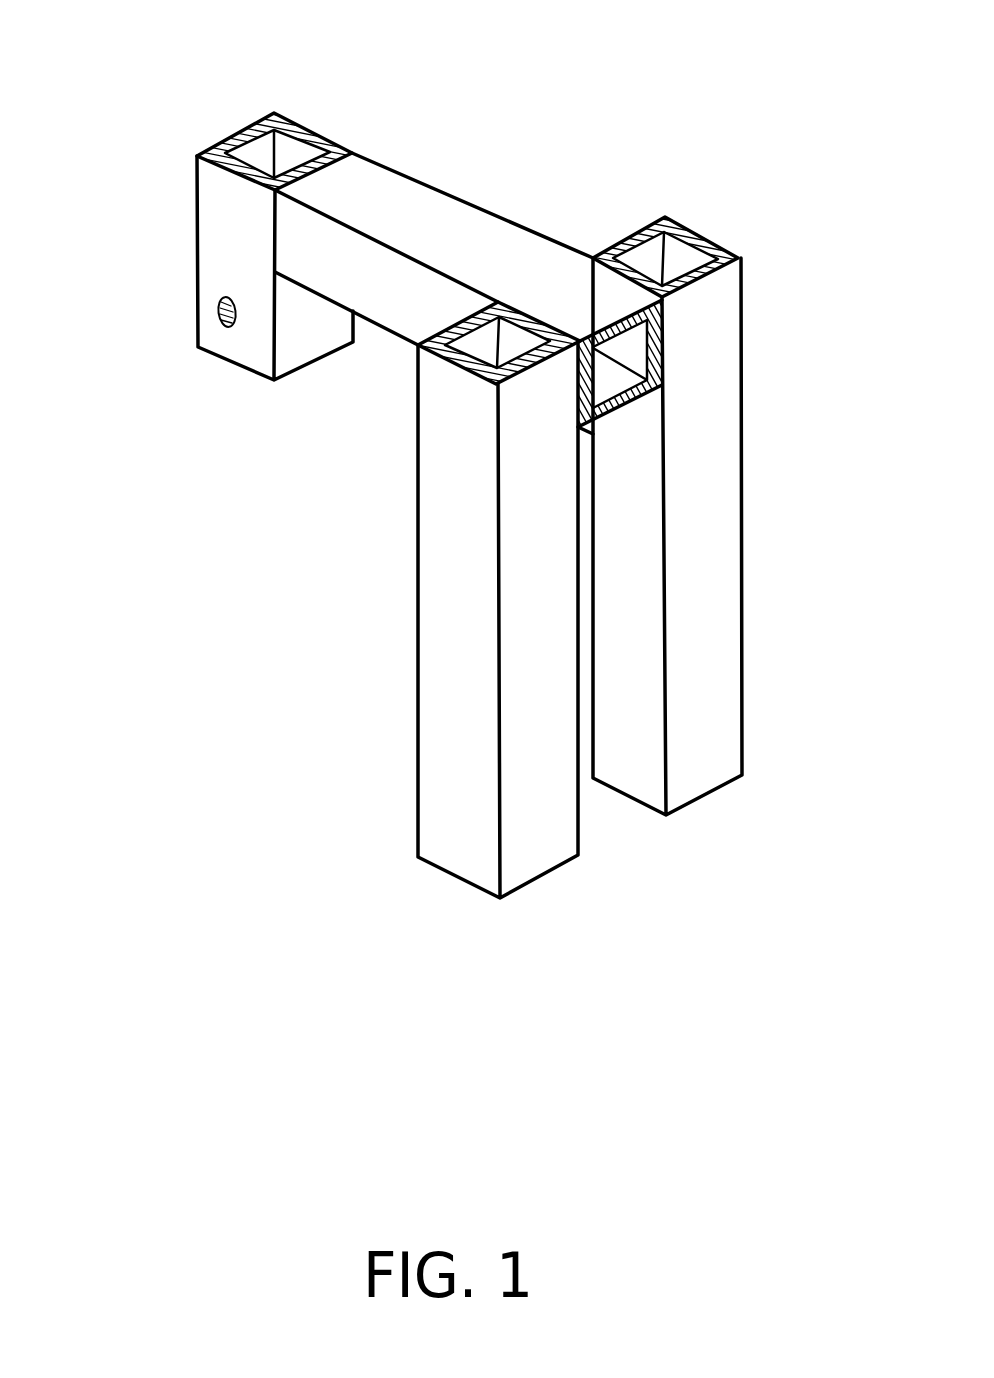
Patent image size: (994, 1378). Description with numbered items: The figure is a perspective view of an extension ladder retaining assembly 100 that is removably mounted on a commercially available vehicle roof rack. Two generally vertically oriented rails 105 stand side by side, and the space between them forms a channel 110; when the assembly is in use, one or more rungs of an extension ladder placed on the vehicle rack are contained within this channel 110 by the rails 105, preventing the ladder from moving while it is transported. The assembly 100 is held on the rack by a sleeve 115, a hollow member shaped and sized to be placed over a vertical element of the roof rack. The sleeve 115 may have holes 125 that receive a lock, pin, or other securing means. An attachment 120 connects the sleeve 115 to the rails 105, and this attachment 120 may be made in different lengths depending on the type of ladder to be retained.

The extension ladder retaining assembly 100 is at (197, 102).
The rail 105 is at (442, 717).
The channel 110 is at (593, 807).
The sleeve 115 is at (235, 252).
The attachment 120 is at (443, 213).
The hole 125 is at (217, 305).